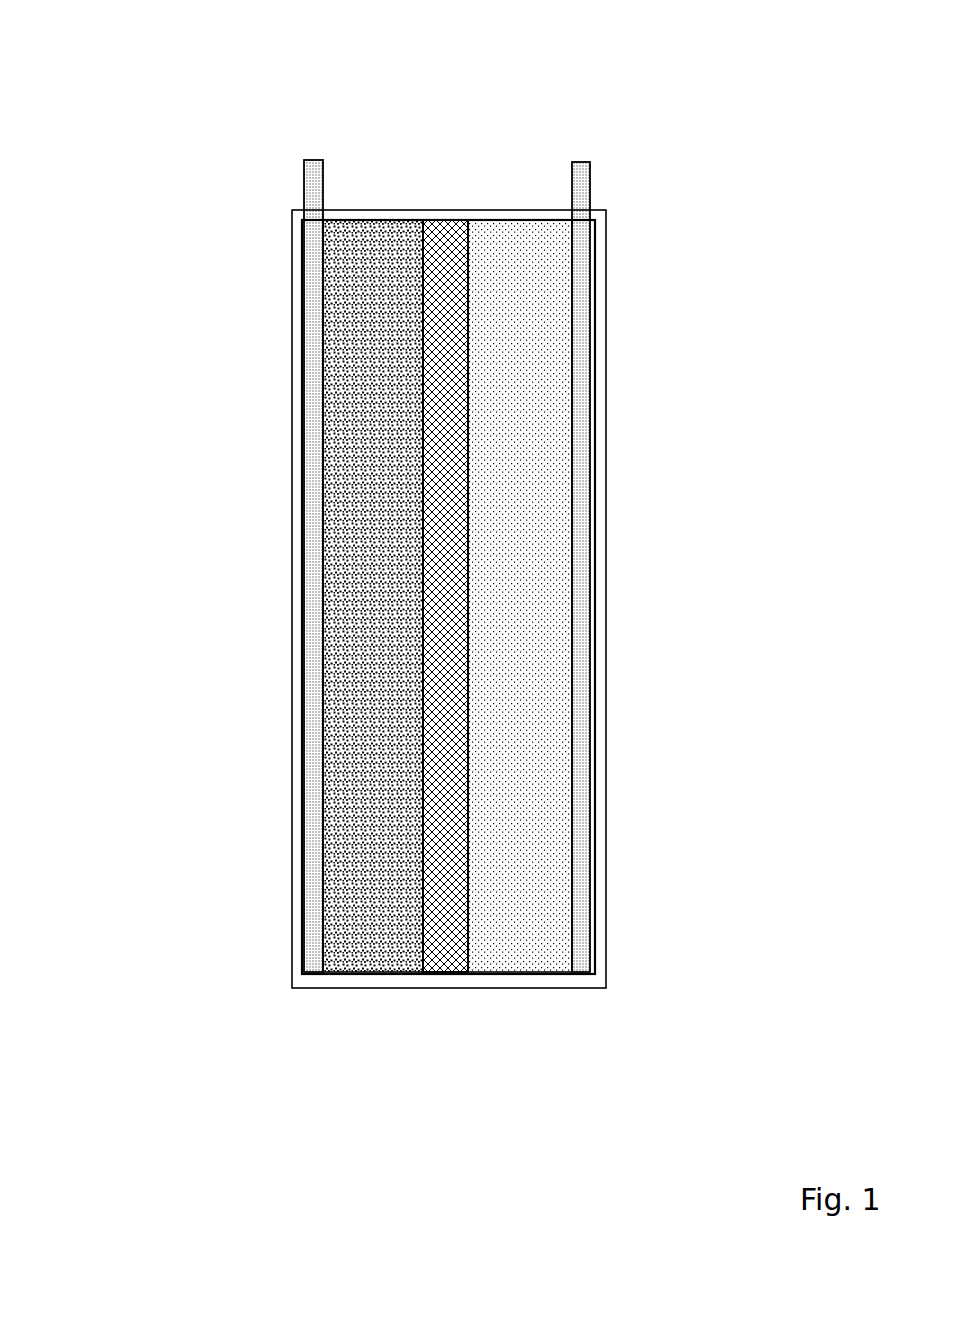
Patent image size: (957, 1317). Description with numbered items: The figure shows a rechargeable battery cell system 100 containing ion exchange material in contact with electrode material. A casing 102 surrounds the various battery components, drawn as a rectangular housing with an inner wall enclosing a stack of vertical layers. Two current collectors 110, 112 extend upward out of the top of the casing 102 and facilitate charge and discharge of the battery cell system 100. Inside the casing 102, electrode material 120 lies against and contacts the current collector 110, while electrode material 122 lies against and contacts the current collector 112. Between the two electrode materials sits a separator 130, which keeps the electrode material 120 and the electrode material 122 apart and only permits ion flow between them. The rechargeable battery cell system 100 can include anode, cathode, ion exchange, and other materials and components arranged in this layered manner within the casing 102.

The rechargeable battery cell system 100 is at (132, 81).
The casing 102 is at (286, 499).
The current collector 110 is at (298, 195).
The current collector 112 is at (595, 190).
The electrode material 120 is at (358, 253).
The electrode material 122 is at (504, 253).
The separator 130 is at (442, 250).